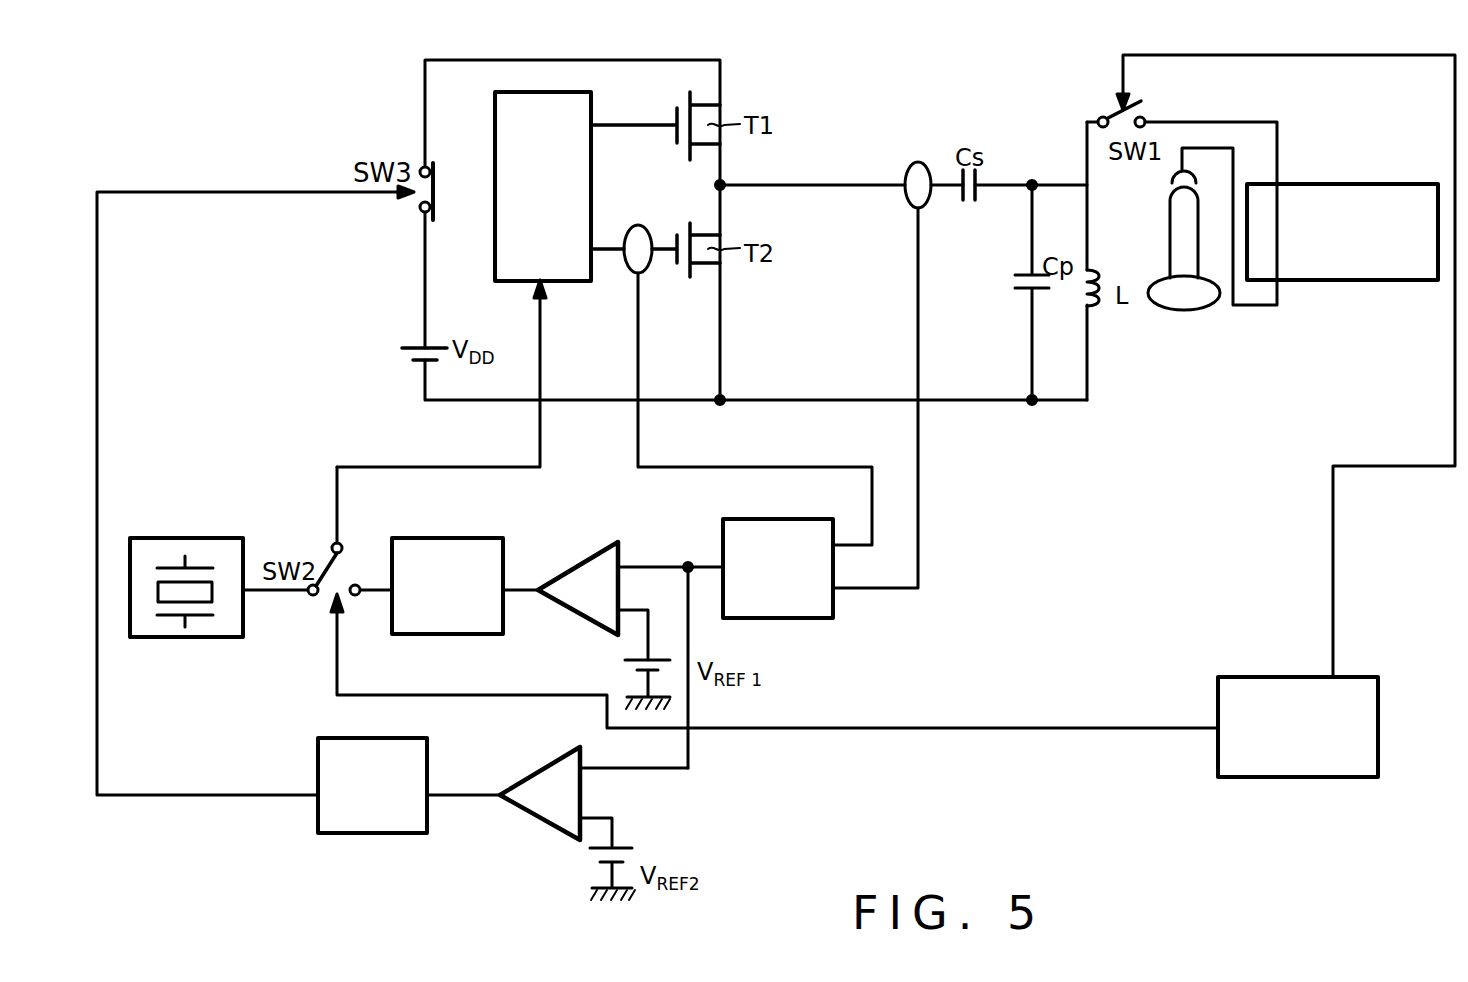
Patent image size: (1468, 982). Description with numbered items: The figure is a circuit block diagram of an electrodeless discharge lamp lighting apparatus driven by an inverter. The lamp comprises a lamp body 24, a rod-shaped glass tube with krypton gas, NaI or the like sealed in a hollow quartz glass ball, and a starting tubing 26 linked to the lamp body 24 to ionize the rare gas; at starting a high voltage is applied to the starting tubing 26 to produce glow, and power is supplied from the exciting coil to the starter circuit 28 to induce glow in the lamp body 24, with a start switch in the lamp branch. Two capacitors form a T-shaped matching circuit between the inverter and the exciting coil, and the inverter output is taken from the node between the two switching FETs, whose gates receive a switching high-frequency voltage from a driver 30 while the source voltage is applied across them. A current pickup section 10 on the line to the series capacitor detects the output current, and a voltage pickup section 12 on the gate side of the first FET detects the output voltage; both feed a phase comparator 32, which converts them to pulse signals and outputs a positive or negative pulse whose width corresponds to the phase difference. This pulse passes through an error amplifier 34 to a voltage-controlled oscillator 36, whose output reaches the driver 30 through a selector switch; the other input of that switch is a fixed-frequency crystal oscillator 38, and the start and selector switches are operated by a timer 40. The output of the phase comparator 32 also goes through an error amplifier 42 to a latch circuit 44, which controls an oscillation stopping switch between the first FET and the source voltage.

The current pickup section 10 is at (909, 198).
The voltage pickup section 12 is at (650, 272).
The lamp body 24 is at (1200, 310).
The starting tubing 26 is at (1170, 231).
The starter circuit 28 is at (1392, 184).
The driver 30 is at (578, 283).
The phase comparator 32 is at (817, 618).
The error amplifier 34 is at (593, 542).
The voltage-controlled oscillator 36 is at (490, 538).
The crystal oscillator 38 is at (222, 538).
The timer 40 is at (1355, 778).
The error amplifier 42 is at (530, 804).
The latch circuit 44 is at (430, 766).